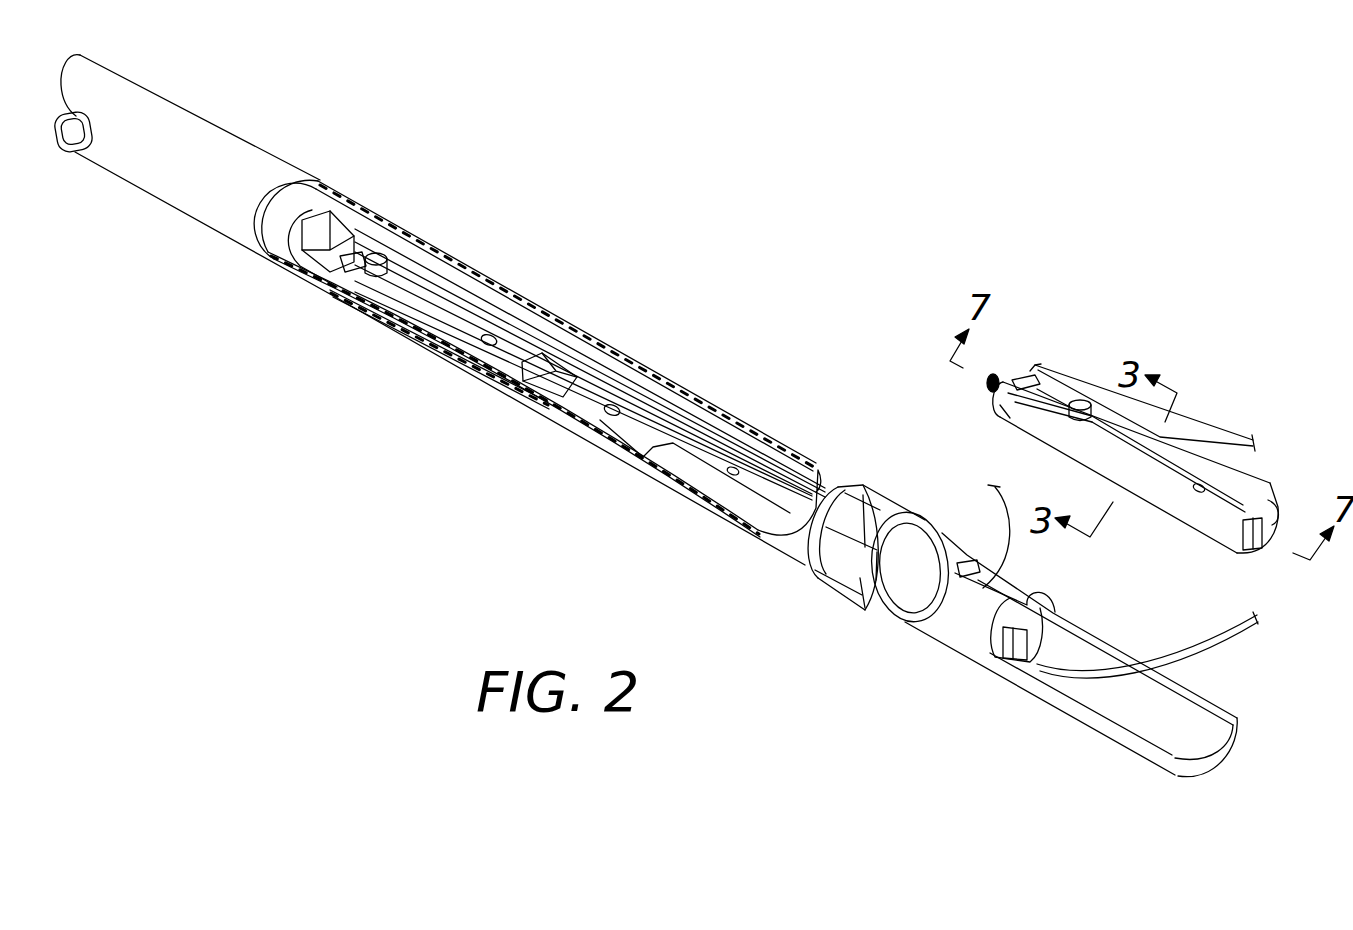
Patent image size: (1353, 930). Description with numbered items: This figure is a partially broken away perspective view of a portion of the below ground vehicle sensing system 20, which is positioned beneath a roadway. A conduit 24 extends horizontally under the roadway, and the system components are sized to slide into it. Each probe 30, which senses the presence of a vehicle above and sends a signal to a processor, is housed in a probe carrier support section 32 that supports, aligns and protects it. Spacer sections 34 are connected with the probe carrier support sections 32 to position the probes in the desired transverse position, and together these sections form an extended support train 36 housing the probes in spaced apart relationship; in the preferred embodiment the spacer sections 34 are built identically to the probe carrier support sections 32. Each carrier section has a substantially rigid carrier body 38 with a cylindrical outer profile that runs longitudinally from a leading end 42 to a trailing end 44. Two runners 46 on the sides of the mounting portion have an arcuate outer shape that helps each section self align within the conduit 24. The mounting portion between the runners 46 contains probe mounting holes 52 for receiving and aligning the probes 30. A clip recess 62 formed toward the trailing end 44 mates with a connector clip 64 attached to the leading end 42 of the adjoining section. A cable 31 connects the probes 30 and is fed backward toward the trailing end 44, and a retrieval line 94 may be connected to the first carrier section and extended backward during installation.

The vehicle sensing system 20 is at (580, 195).
The conduit 24 is at (257, 158).
The probe 30 is at (352, 287).
The cable 31 is at (473, 298).
The probe carrier support section 32 is at (1147, 493).
The spacer section 34 is at (702, 482).
The extended support train 36 is at (663, 400).
The carrier body 38 is at (1013, 417).
The leading end 42 is at (998, 407).
The trailing end 44 is at (1273, 513).
The runner 46 is at (1093, 457).
The probe mounting hole 52 is at (484, 341).
The clip recess 62 is at (1253, 493).
The connector clip 64 is at (537, 380).
The retrieval line 94 is at (1220, 630).